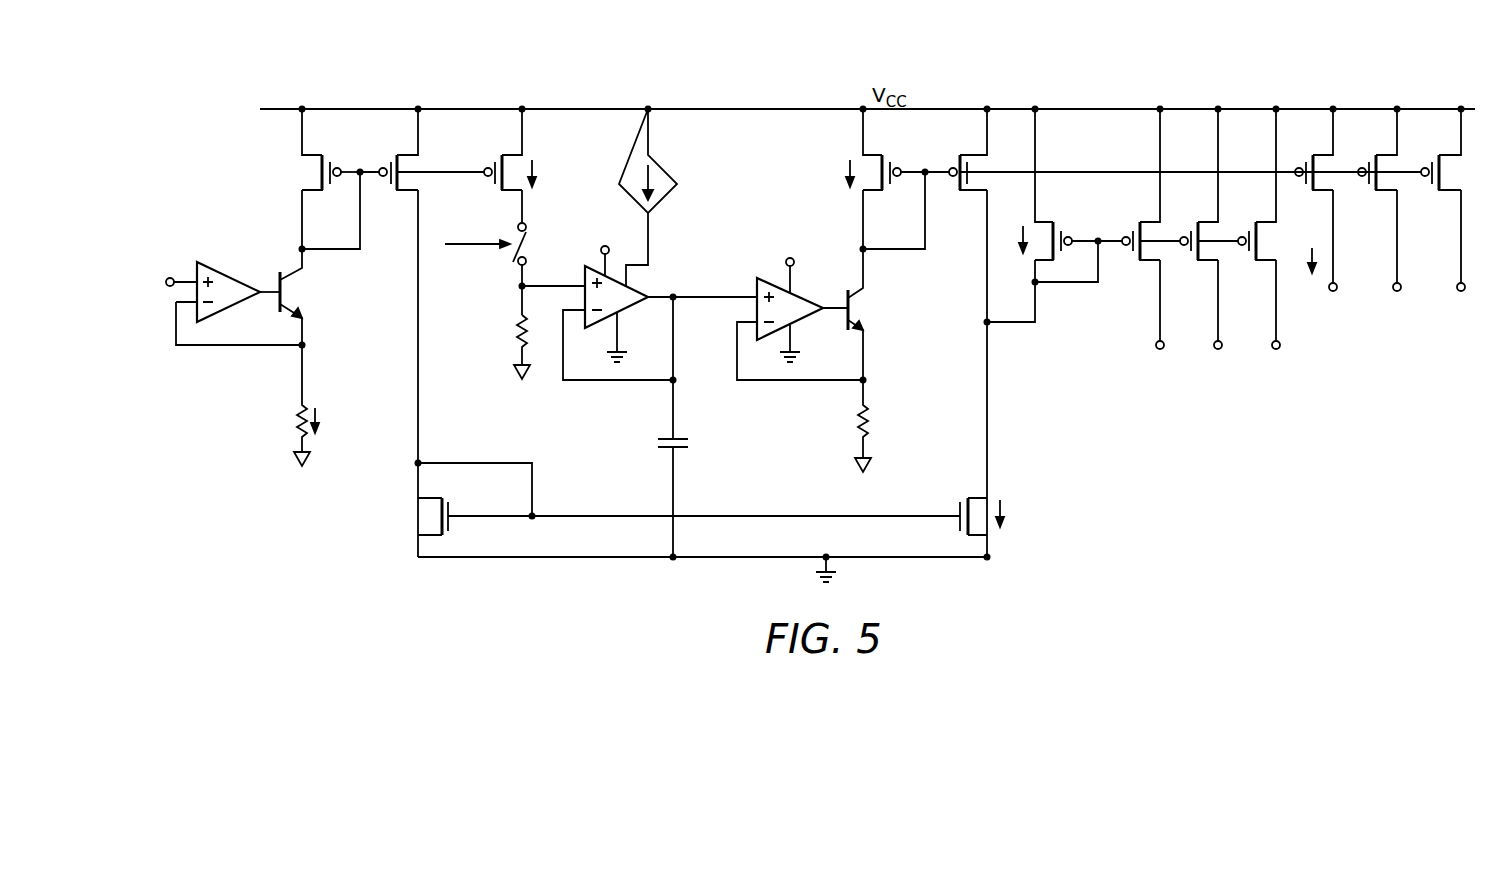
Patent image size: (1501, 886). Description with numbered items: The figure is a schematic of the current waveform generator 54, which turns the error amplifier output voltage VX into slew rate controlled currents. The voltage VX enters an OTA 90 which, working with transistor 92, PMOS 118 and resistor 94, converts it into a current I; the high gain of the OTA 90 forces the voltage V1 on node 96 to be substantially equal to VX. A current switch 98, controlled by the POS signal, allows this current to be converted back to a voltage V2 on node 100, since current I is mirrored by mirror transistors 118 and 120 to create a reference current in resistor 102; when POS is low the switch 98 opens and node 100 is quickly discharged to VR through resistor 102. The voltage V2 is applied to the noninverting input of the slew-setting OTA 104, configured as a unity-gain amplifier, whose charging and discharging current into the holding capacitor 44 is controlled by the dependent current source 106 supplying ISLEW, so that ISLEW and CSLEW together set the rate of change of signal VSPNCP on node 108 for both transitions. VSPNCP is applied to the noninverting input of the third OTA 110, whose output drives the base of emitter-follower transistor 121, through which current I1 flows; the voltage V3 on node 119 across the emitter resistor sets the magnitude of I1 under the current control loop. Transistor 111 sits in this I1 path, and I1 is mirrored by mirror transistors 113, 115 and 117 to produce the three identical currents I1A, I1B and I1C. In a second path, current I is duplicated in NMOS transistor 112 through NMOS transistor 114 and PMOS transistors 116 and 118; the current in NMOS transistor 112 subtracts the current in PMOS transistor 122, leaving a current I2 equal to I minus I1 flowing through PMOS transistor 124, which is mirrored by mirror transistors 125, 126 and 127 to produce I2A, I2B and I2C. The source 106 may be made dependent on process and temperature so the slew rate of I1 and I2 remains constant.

The current waveform generator 54 is at (686, 70).
The OTA 90 is at (230, 272).
The transistor 92 is at (279, 275).
The resistor 94 is at (297, 422).
The node 96 is at (298, 352).
The current switch 98 is at (516, 232).
The node 100 is at (518, 286).
The resistor 102 is at (514, 326).
The slew-setting OTA 104 is at (628, 312).
The dependent current source 106 is at (661, 204).
The node 108 is at (678, 302).
The third OTA 110 is at (800, 324).
The transistor 111 is at (898, 192).
The NMOS transistor 112 is at (958, 507).
The mirror transistor 113 is at (1300, 192).
The NMOS transistor 114 is at (450, 510).
The mirror transistor 115 is at (1363, 192).
The PMOS transistor 116 is at (388, 192).
The mirror transistor 117 is at (1426, 192).
The PMOS 118 is at (335, 192).
The node 119 is at (857, 384).
The mirror transistor 120 is at (491, 180).
The emitter-follower transistor 121 is at (847, 288).
The PMOS transistor 122 is at (953, 192).
The PMOS transistor 124 is at (1063, 234).
The mirror transistor 125 is at (1128, 264).
The mirror transistor 126 is at (1186, 264).
The mirror transistor 127 is at (1244, 264).
The holding capacitor 44 is at (662, 446).